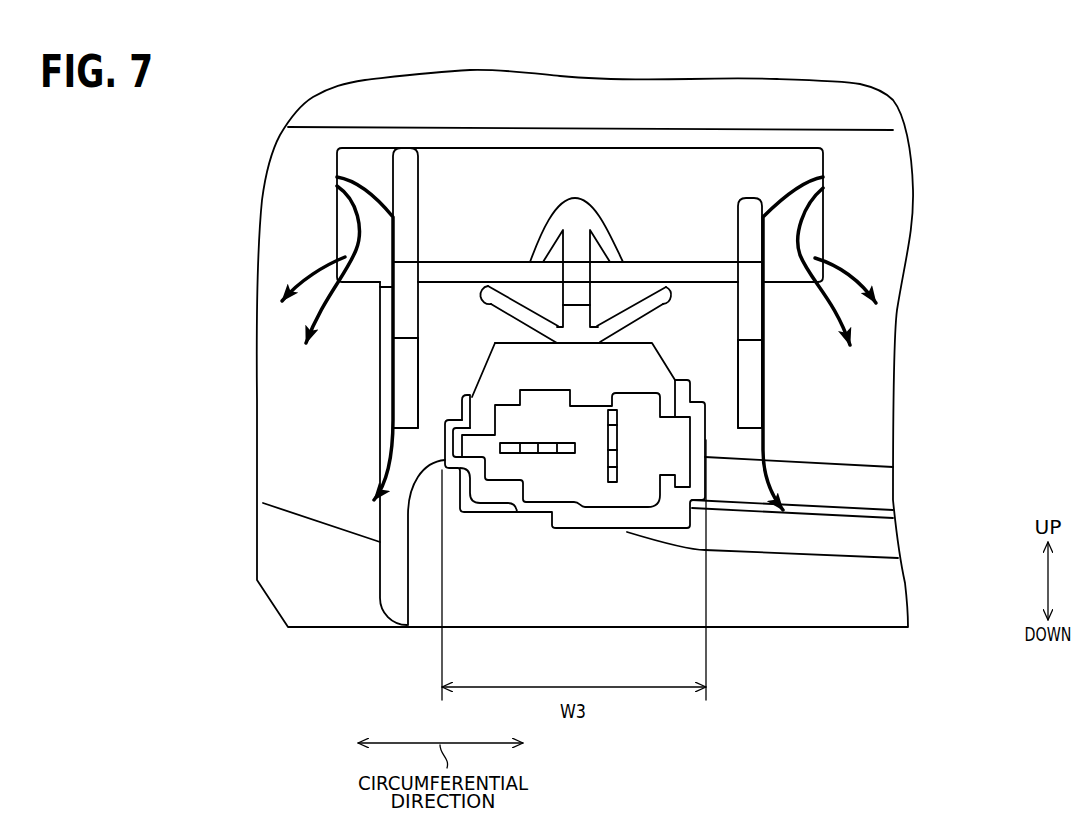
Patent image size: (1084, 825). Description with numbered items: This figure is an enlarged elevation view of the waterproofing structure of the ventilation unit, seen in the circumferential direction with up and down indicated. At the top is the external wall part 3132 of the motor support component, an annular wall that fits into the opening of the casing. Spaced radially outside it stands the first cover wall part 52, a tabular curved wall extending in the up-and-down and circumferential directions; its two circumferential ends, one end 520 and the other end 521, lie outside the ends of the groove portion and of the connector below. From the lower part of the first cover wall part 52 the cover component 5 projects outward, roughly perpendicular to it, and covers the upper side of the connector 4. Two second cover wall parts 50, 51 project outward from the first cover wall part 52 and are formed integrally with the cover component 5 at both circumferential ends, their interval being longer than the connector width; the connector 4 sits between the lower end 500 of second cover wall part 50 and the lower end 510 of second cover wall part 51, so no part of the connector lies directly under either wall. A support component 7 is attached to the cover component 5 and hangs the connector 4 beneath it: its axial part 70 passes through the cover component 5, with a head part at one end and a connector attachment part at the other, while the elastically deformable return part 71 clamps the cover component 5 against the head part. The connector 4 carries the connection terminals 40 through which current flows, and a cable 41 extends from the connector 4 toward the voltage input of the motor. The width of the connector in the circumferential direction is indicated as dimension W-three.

The external wall part 3132 is at (850, 130).
The first cover wall part 52 is at (685, 148).
The cover component 5 is at (487, 270).
The second cover wall part 51 is at (407, 163).
The lower end of the second cover wall part 510 is at (405, 398).
The second cover wall part 50 is at (750, 212).
The lower end of the second cover wall part 500 is at (750, 407).
The other end of the first cover wall part 521 is at (337, 158).
The one end of the first cover wall part 520 is at (823, 167).
The support component 7 is at (582, 212).
The axial part 70 is at (575, 312).
The return part 71 is at (648, 303).
The connector 4 is at (407, 623).
The connection terminal 40 is at (537, 448).
The cable 41 is at (850, 543).